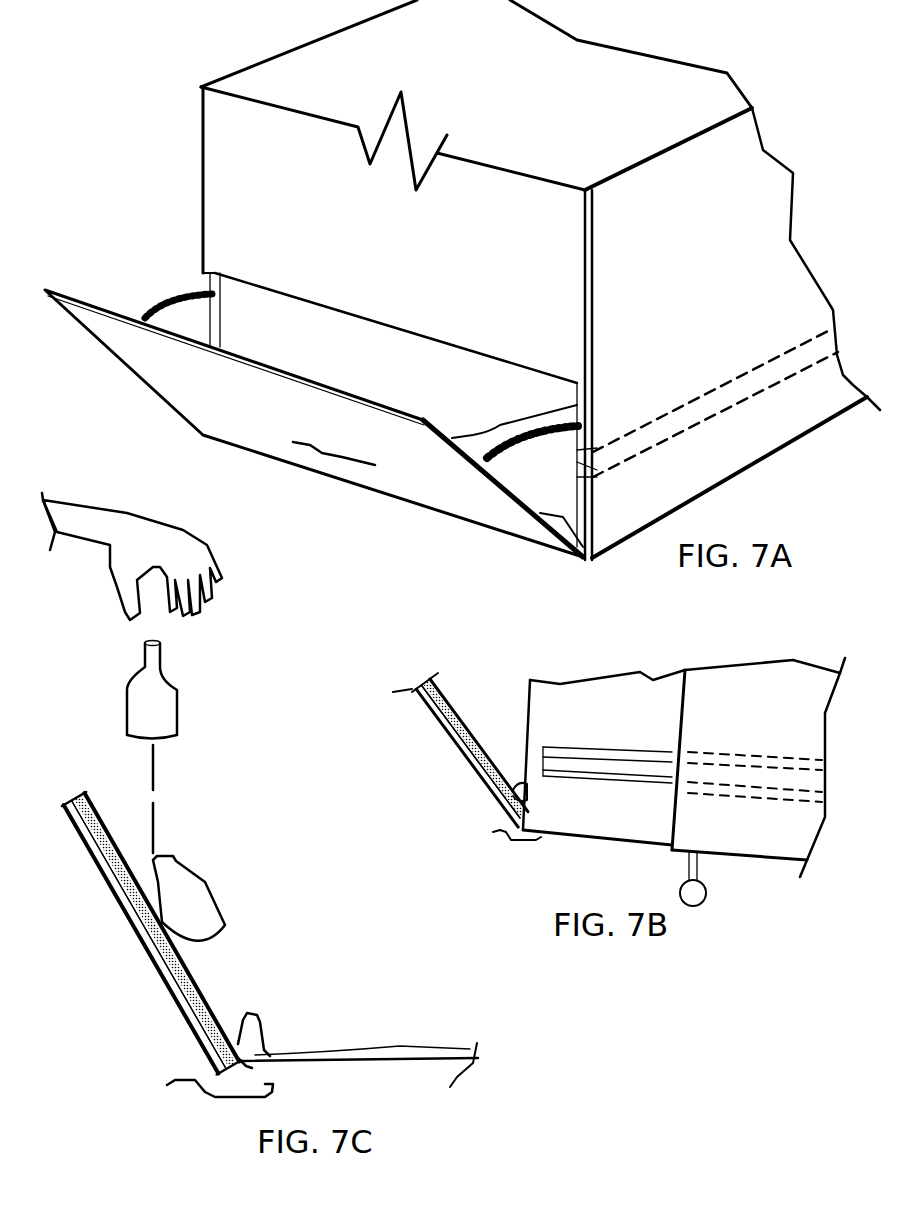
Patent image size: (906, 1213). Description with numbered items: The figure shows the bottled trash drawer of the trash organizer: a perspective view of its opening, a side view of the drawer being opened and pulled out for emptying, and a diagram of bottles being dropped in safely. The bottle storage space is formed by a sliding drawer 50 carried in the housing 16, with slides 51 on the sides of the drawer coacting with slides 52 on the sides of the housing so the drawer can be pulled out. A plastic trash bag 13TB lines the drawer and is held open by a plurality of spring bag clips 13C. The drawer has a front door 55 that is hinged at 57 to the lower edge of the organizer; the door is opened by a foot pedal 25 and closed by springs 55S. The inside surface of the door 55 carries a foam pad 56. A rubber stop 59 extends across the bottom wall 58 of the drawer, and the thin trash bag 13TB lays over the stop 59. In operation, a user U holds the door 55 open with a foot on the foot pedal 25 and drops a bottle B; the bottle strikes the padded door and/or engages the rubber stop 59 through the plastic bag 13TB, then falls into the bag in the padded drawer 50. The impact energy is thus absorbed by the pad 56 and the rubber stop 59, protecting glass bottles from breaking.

In FIG. 7A, the housing / cabinet body 16 is at (545, 268).
In FIG. 7A, the front door 55 is at (183, 383).
In FIG. 7B, the front door 55 is at (450, 743).
In FIG. 7C, the front door 55 is at (178, 1027).
In FIG. 7A, the springs 55S is at (155, 308).
In FIG. 7A, the plastic trash bag 13TB is at (473, 435).
In FIG. 7B, the plastic trash bag 13TB is at (490, 767).
In FIG. 7C, the plastic trash bag 13TB is at (250, 1010).
In FIG. 7A, the slides 51 is at (757, 383).
In FIG. 7B, the slides 51 is at (577, 753).
In FIG. 7A, the coacting slides 52 is at (715, 414).
In FIG. 7B, the coacting slides 52 is at (713, 763).
In FIG. 7A, the user U is at (113, 550).
In FIG. 7C, the bottle B is at (150, 662).
In FIG. 7C, the spring bag clips 13C is at (105, 820).
In FIG. 7C, the foam pad 56 is at (150, 913).
In FIG. 7C, the hinge 57 is at (247, 1063).
In FIG. 7C, the bottom wall 58 is at (383, 1060).
In FIG. 7B, the rubber stop 59 is at (527, 792).
In FIG. 7C, the rubber stop 59 is at (257, 1030).
In FIG. 7B, the foot pedal 25 is at (507, 837).
In FIG. 7C, the foot pedal 25 is at (198, 1082).
In FIG. 7B, the sliding drawer 50 is at (627, 672).